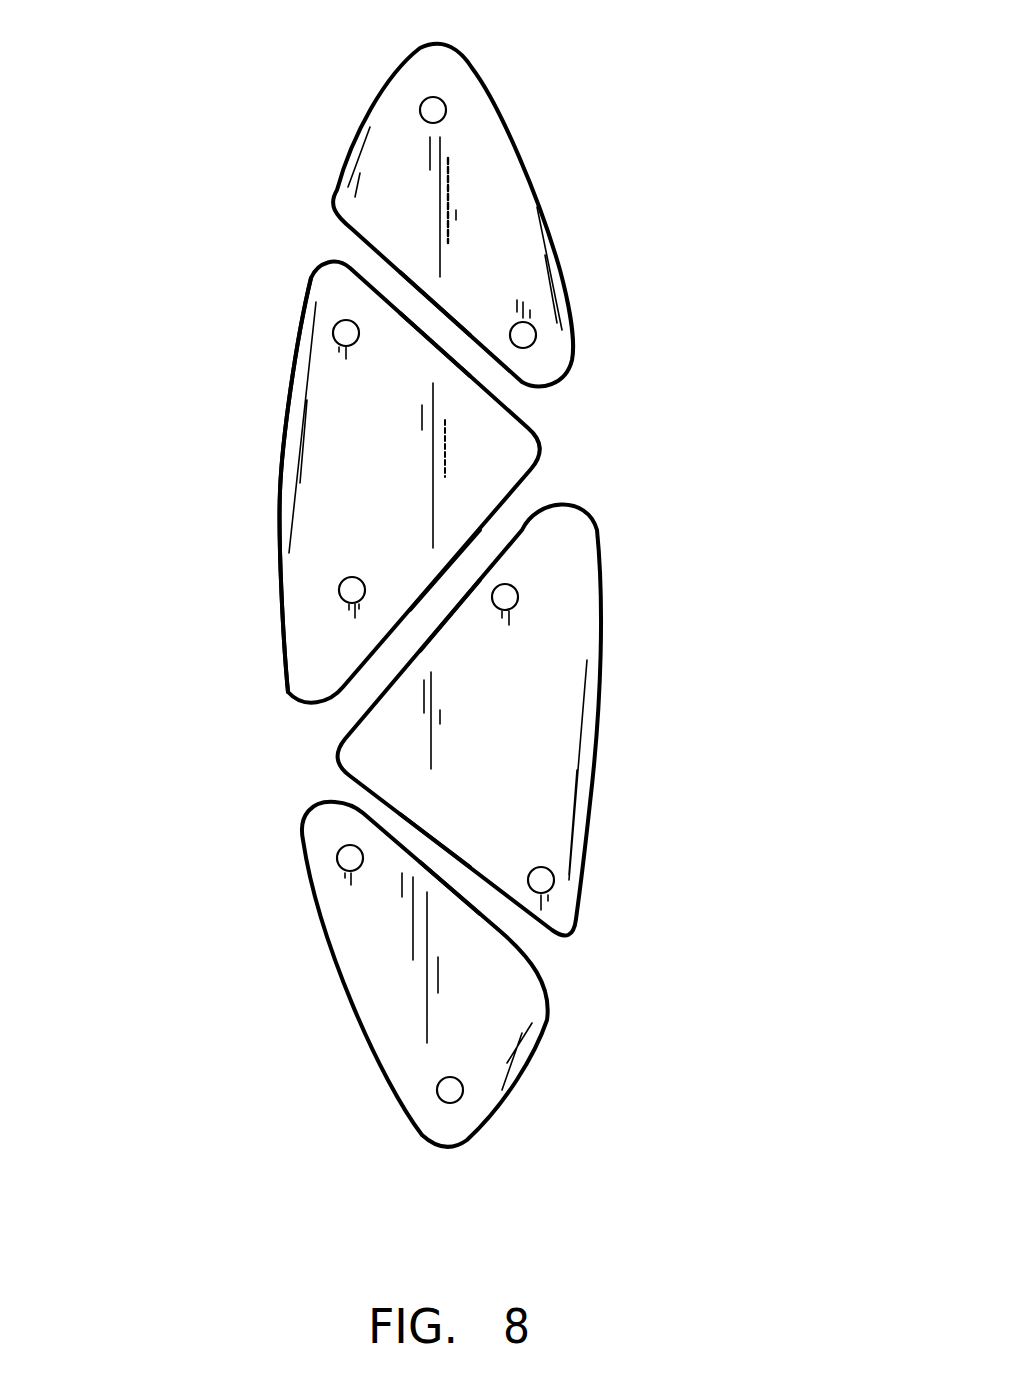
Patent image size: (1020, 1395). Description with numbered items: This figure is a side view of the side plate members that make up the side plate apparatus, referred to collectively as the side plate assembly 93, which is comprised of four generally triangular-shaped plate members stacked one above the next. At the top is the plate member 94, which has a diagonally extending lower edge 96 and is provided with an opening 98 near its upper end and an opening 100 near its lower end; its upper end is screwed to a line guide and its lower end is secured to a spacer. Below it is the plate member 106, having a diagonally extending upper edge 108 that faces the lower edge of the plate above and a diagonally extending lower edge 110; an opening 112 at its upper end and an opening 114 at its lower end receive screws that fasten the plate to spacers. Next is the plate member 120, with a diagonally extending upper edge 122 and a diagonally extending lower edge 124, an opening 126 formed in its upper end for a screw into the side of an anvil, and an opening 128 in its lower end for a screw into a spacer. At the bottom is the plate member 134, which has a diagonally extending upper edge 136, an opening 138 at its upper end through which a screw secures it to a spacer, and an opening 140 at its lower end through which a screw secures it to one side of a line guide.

The side plate assembly 93 is at (245, 464).
The plate member 94 is at (503, 208).
The lower edge 96 is at (450, 307).
The opening 98 is at (433, 110).
The opening 100 is at (523, 335).
The plate member 106 is at (492, 448).
The upper edge 108 is at (434, 344).
The lower edge 110 is at (443, 570).
The opening 112 is at (346, 333).
The opening 114 is at (352, 590).
The plate member 120 is at (540, 732).
The upper edge 122 is at (446, 628).
The lower edge 124 is at (434, 841).
The opening 126 is at (505, 597).
The opening 128 is at (541, 880).
The plate member 134 is at (378, 994).
The upper edge 136 is at (462, 893).
The opening 138 is at (350, 858).
The opening 140 is at (450, 1090).